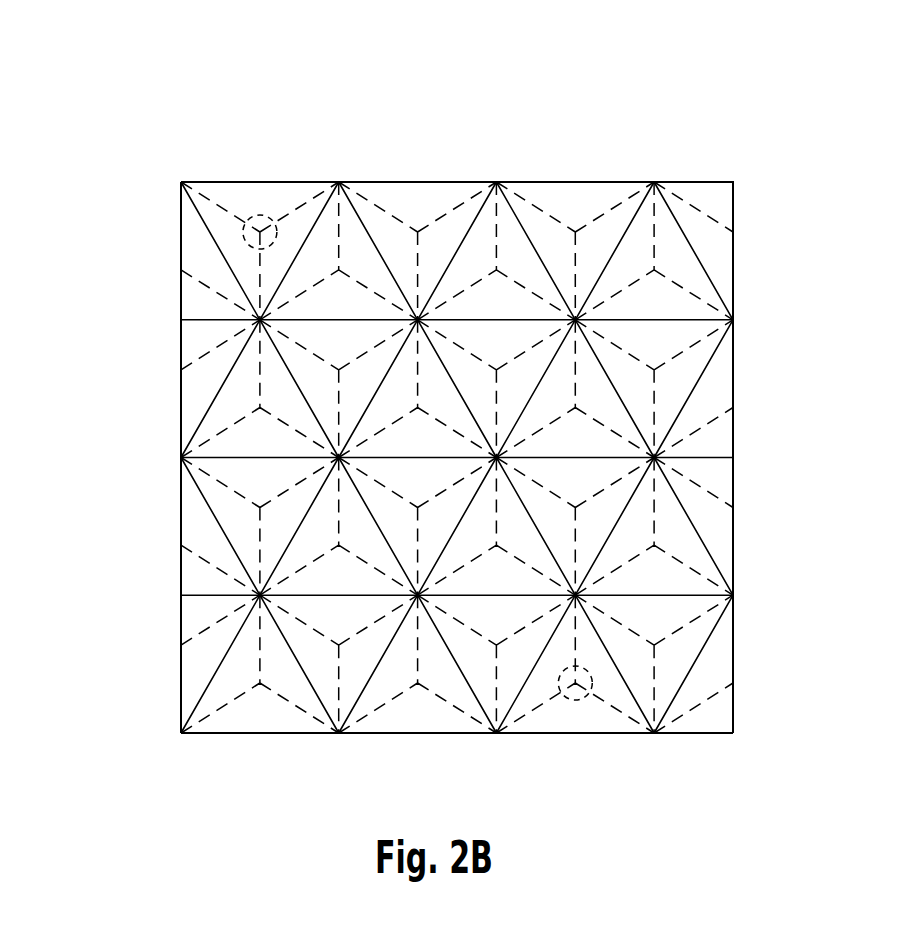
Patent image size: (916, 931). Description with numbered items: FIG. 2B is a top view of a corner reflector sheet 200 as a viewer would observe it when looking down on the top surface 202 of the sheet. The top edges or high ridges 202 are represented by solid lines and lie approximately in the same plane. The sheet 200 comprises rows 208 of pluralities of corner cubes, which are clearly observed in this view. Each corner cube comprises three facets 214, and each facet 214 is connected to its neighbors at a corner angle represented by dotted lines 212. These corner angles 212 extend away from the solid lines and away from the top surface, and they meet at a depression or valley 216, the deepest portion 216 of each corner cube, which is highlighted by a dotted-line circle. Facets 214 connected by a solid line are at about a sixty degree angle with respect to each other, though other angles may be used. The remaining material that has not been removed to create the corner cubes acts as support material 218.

The sheet 200 is at (645, 148).
The top surface 202 is at (700, 380).
The rows 208 is at (753, 594).
The corner angles 212 is at (467, 198).
The facets 214 is at (575, 197).
The deepest portion 216 is at (260, 216).
The support material 218 is at (180, 253).